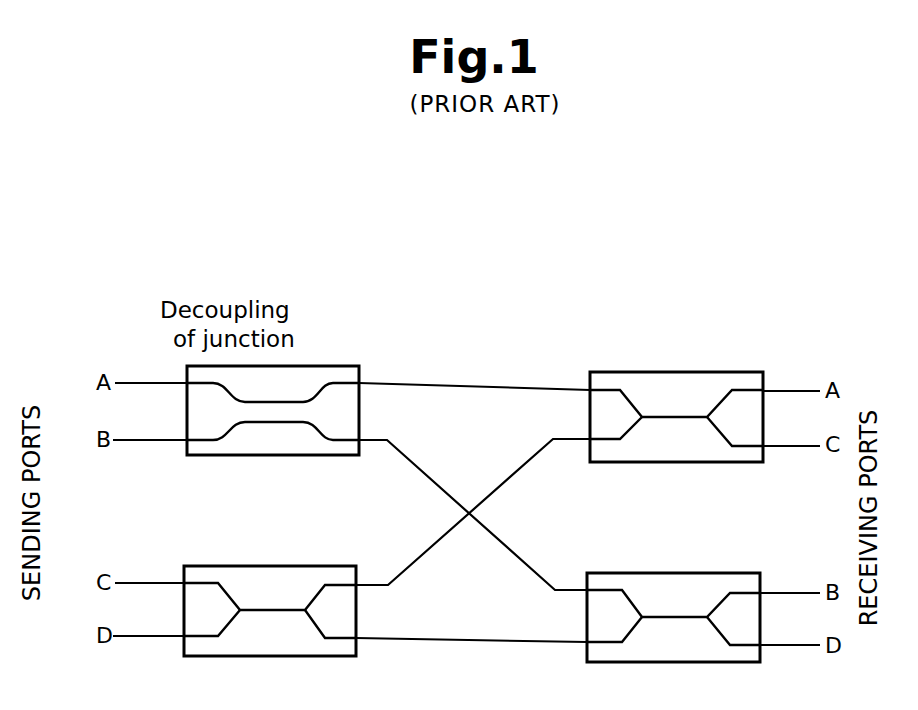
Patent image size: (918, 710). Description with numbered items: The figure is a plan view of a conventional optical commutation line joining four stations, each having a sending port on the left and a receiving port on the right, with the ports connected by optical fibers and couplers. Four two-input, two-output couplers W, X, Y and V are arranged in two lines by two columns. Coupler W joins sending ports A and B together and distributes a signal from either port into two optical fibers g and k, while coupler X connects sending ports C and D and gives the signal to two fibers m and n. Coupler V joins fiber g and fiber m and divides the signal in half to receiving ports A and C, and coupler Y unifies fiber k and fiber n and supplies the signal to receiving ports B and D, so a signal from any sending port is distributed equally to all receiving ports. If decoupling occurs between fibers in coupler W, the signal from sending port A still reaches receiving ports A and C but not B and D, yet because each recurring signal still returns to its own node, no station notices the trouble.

The coupler W is at (273, 410).
The coupler X is at (270, 611).
The coupler V is at (676, 417).
The coupler Y is at (673, 617).
The optical fiber g is at (474, 374).
The optical fiber k is at (473, 515).
The optical fiber m is at (473, 512).
The optical fiber n is at (471, 627).